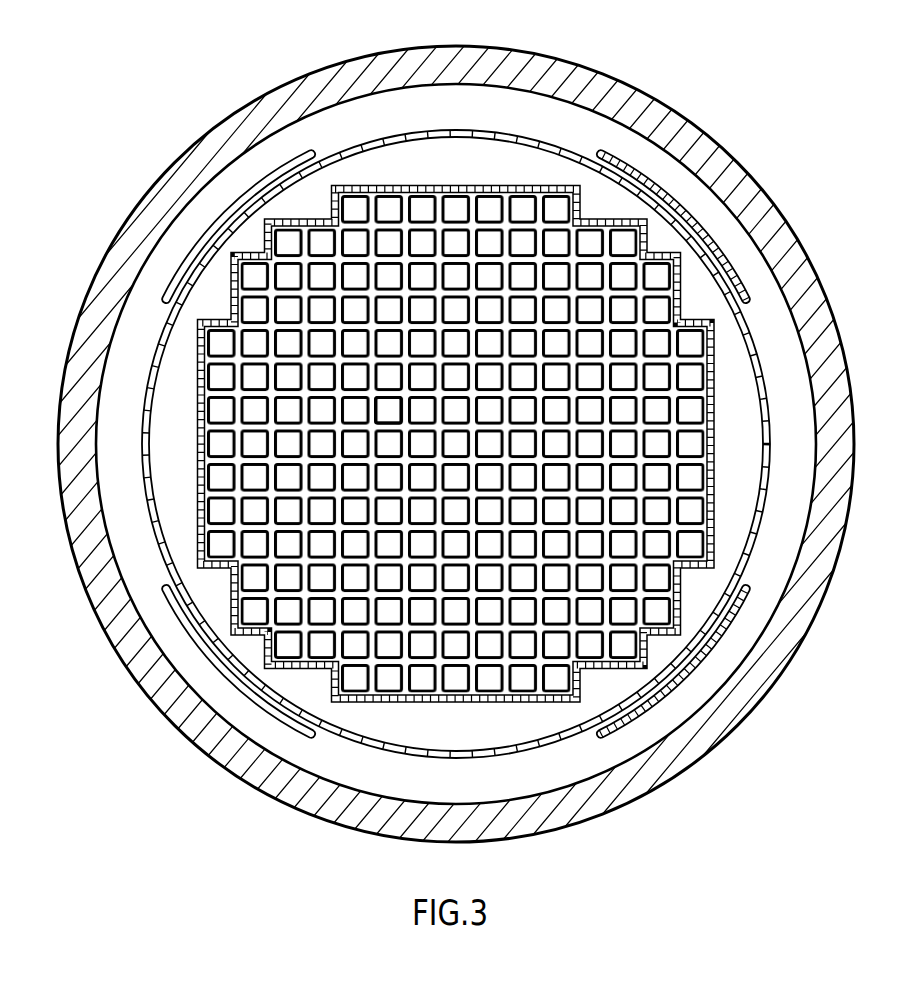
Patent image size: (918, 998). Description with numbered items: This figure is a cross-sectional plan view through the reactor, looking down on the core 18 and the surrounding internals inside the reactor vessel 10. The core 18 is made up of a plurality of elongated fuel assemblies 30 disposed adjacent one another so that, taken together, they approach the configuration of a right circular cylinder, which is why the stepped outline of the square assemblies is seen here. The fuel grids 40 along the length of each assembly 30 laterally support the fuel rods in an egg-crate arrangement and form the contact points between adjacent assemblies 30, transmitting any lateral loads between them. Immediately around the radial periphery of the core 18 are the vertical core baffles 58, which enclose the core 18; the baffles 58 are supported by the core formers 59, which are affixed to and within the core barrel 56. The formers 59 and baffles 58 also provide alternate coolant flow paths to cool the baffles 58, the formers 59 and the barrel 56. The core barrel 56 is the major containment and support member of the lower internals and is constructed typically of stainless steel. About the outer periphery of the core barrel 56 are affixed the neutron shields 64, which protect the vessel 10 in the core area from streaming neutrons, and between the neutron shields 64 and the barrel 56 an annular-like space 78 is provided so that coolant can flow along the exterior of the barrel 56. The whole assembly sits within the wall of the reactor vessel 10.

The reactor vessel 10 is at (440, 56).
The core 18 is at (380, 420).
The fuel assembly 30 is at (520, 205).
The fuel grid 40 is at (384, 194).
The core barrel 56 is at (153, 369).
The core baffle 58 is at (199, 413).
The core former 59 is at (663, 233).
The neutron shield 64 is at (298, 153).
The annular-like space 78 is at (701, 647).